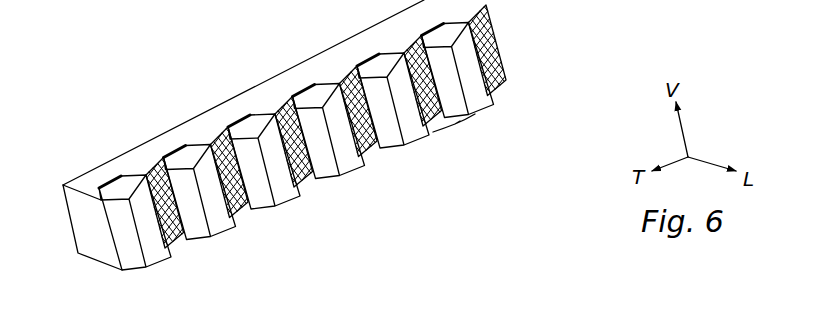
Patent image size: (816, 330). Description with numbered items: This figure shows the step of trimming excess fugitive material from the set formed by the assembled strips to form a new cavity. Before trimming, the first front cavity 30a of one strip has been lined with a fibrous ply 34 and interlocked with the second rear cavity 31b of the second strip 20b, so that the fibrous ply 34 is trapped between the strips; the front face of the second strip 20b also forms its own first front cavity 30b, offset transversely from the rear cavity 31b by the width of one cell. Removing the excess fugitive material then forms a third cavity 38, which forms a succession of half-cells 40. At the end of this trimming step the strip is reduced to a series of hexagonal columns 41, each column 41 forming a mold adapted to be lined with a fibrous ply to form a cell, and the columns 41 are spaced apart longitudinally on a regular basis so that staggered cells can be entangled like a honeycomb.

The second strip 20b is at (335, 149).
The first front cavity 30a is at (176, 244).
The first front cavity 30b is at (217, 219).
The second rear cavity 31b is at (172, 142).
The fibrous ply 34 is at (293, 99).
The third cavity 38 is at (376, 143).
The half-cells 40 is at (512, 98).
The hexagonal columns 41 is at (299, 207).